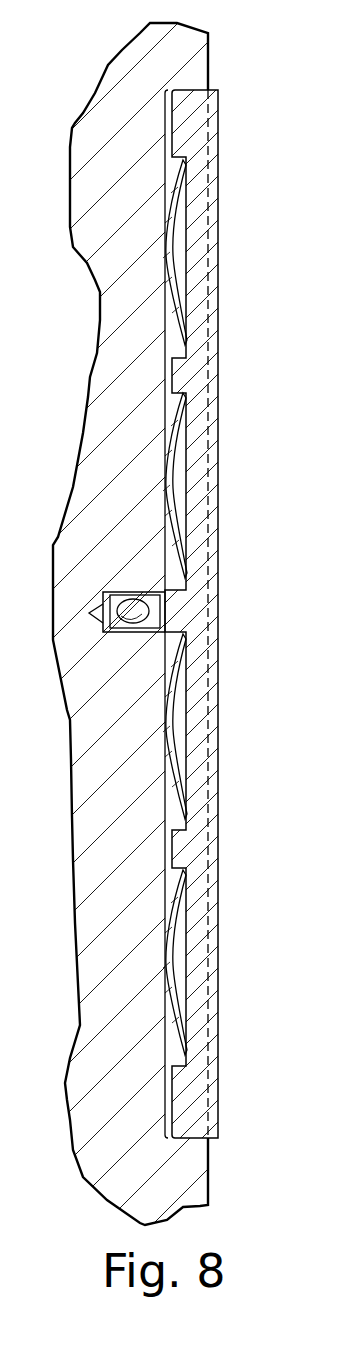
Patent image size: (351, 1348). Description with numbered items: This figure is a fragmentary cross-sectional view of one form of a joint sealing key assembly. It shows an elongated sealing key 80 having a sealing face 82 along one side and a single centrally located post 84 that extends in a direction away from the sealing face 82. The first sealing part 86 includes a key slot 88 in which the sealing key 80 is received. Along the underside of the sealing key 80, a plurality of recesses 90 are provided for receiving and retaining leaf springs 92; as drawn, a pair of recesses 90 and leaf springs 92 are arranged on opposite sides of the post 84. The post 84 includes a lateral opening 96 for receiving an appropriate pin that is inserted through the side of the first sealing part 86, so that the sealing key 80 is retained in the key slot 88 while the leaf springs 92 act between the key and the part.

The sealing key 80 is at (187, 370).
The sealing face 82 is at (220, 543).
The post 84 is at (140, 592).
The first sealing part 86 is at (132, 63).
The key slot 88 is at (168, 118).
The recesses 90 is at (181, 234).
The leaf springs 92 is at (178, 199).
The lateral opening 96 is at (118, 612).